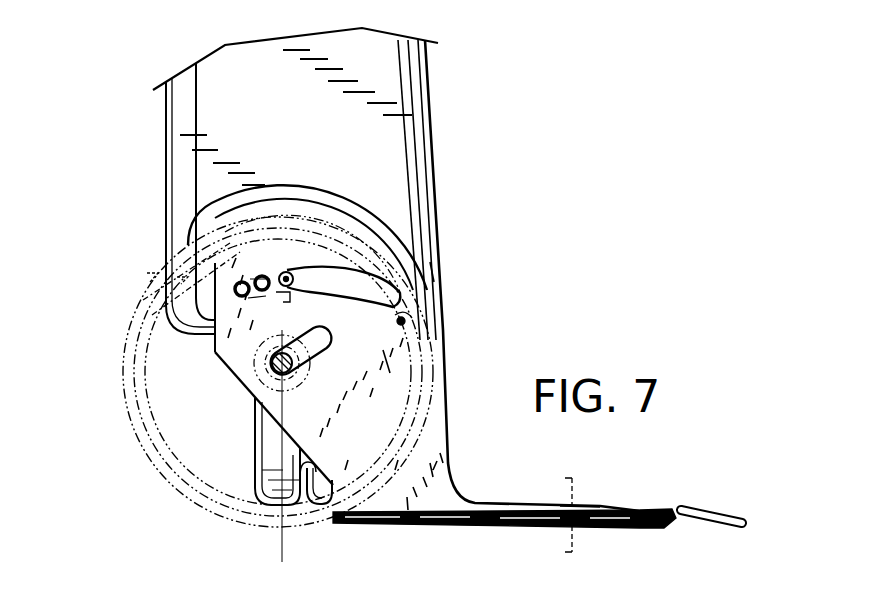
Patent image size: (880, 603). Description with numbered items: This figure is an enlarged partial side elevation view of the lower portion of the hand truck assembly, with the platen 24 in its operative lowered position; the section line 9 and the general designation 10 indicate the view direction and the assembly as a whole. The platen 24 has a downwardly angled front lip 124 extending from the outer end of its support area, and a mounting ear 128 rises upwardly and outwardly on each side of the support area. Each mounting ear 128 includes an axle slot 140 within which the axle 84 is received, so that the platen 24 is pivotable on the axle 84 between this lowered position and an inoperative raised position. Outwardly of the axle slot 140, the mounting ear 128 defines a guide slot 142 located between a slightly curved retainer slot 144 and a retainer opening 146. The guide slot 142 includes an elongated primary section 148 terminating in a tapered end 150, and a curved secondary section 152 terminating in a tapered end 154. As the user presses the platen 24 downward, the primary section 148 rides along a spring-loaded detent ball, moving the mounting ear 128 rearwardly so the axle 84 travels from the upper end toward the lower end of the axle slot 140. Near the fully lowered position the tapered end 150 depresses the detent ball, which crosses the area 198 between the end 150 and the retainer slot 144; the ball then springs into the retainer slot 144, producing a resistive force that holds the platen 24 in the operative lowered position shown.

The seat assembly 10 is at (205, 195).
The section line 9- 9 is at (562, 478).
The platen 24 is at (597, 496).
The axle 84 is at (268, 372).
The front lip 124 is at (714, 507).
The mounting ear 128 is at (213, 358).
The axle slot 140 is at (327, 333).
The guide slot 142 is at (413, 245).
The retainer slot 144 is at (235, 289).
The retainer opening 146 is at (406, 320).
The primary section 148 is at (284, 300).
The tapered end 150 is at (347, 213).
The secondary section 152 is at (436, 270).
The tapered end 154 is at (440, 296).
The area of mounting ear 198 is at (150, 276).